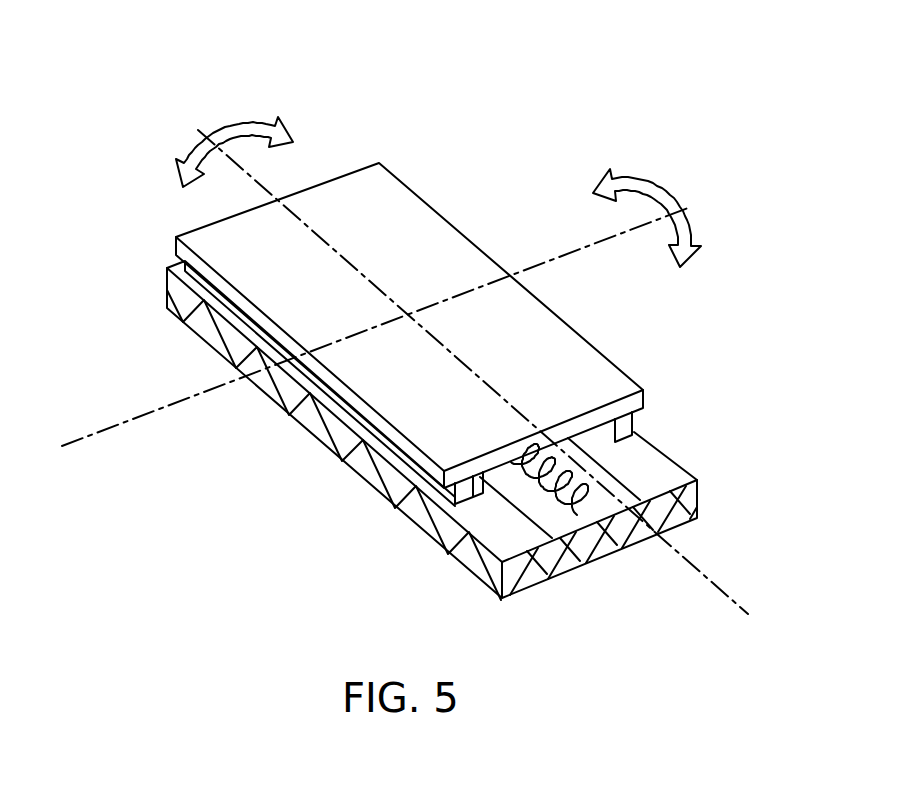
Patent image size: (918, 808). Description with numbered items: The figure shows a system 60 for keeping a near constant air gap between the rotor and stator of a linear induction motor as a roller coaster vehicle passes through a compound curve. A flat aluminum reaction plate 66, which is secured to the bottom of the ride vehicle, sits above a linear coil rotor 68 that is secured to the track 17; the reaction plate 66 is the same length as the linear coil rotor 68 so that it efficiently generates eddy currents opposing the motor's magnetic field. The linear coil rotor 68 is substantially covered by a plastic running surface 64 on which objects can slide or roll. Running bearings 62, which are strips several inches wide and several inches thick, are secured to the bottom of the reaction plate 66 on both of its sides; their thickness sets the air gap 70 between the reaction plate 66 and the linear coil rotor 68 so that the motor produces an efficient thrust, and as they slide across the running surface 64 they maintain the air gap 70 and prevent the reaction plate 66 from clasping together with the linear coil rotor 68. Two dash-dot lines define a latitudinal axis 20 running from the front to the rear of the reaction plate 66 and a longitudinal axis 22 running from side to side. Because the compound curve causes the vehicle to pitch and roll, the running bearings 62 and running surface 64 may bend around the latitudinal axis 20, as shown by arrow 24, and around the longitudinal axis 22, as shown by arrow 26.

The track 17 is at (697, 450).
The latitudinal axis 20 is at (88, 443).
The longitudinal axis 22 is at (726, 588).
The arrow 24 is at (665, 198).
The arrow 26 is at (227, 122).
The system 60 is at (470, 168).
The running bearings 62 is at (631, 433).
The running surface 64 is at (553, 550).
The reaction plate 66 is at (617, 381).
The linear coil rotor 68 is at (604, 570).
The air gap 70 is at (476, 484).